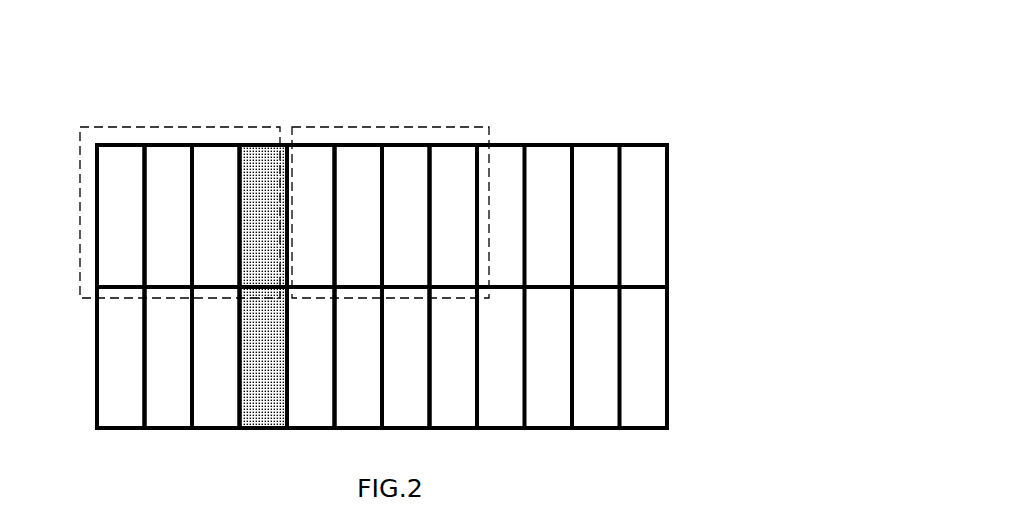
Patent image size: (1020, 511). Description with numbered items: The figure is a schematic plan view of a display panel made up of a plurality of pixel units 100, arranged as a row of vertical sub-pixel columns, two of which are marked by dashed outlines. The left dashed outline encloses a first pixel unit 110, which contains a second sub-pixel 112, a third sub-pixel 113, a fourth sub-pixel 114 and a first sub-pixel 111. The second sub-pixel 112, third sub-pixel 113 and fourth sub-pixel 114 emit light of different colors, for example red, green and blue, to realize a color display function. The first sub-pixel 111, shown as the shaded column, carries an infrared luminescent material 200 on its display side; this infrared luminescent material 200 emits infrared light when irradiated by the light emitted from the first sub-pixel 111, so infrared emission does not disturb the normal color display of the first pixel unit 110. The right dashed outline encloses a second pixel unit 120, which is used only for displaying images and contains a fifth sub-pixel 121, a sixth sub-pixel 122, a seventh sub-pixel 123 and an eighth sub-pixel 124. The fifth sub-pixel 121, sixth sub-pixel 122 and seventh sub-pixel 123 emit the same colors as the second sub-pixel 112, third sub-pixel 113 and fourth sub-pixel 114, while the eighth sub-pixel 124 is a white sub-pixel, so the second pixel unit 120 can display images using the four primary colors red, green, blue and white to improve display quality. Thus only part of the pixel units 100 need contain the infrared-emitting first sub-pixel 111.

The pixel unit 100 is at (373, 233).
The first pixel unit 110 is at (180, 127).
The second pixel unit 120 is at (393, 127).
The first sub-pixel 111 is at (264, 286).
The infrared luminescent material 200 is at (264, 286).
The second sub-pixel 112 is at (121, 286).
The third sub-pixel 113 is at (169, 286).
The fourth sub-pixel 114 is at (216, 286).
The fifth sub-pixel 121 is at (311, 286).
The sixth sub-pixel 122 is at (359, 286).
The seventh sub-pixel 123 is at (406, 286).
The eighth sub-pixel 124 is at (454, 286).